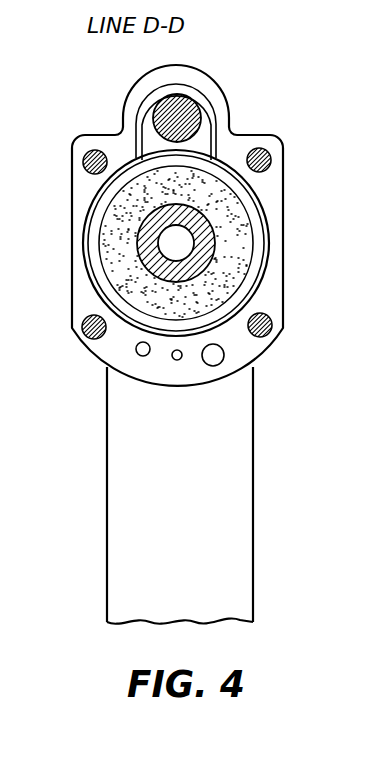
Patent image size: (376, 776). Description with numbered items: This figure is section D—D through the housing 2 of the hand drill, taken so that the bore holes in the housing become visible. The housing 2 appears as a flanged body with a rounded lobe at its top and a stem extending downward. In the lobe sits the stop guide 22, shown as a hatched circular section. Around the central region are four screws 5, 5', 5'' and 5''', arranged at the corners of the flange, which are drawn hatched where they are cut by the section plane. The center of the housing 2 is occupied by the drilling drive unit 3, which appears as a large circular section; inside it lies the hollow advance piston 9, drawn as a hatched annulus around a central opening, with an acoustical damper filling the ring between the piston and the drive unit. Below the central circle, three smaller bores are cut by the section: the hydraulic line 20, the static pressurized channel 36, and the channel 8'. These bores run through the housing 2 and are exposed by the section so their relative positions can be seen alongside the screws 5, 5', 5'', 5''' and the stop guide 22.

The housing 2 is at (275, 207).
The drilling drive unit 3 is at (260, 243).
The screw 5 is at (78, 152).
The screw 5' is at (275, 160).
The screw 5'' is at (70, 327).
The screw 5''' is at (281, 329).
The channel 8' is at (219, 389).
The hollow advance piston 9 is at (148, 240).
The hydraulic line 20 is at (143, 352).
The stop guide 22 is at (192, 112).
The static pressurized channel 36 is at (177, 360).